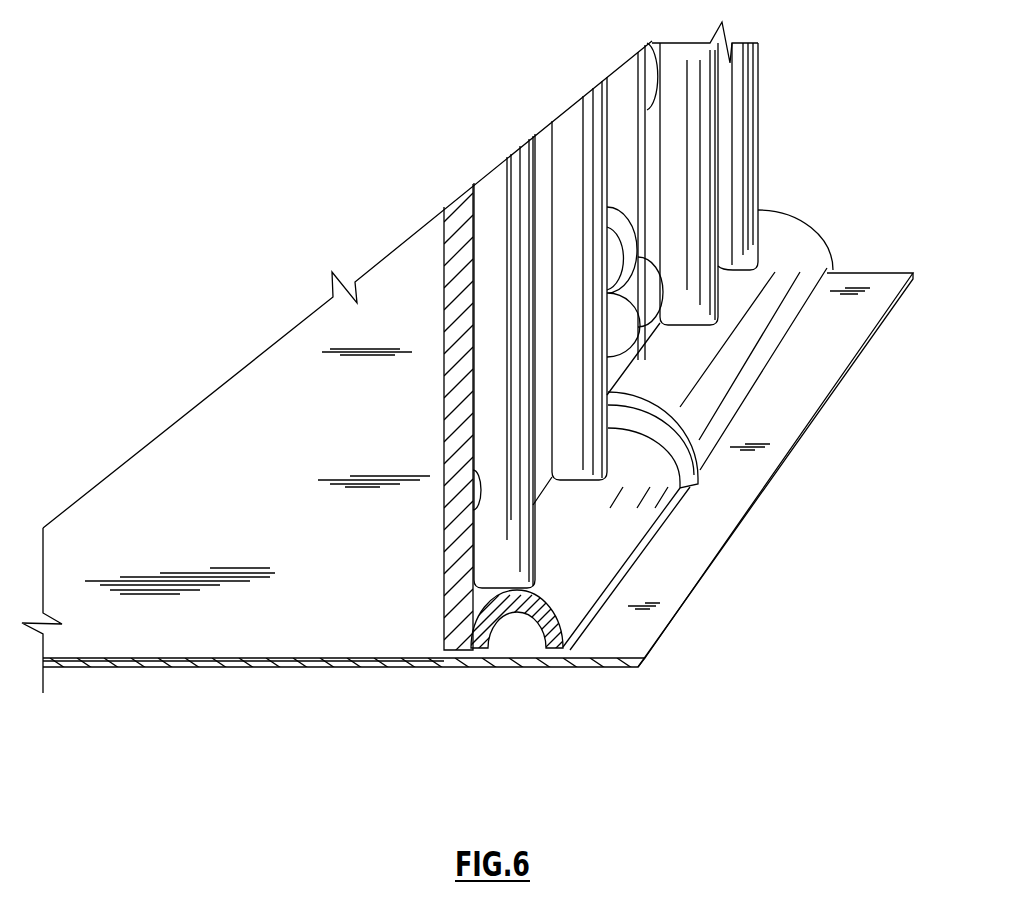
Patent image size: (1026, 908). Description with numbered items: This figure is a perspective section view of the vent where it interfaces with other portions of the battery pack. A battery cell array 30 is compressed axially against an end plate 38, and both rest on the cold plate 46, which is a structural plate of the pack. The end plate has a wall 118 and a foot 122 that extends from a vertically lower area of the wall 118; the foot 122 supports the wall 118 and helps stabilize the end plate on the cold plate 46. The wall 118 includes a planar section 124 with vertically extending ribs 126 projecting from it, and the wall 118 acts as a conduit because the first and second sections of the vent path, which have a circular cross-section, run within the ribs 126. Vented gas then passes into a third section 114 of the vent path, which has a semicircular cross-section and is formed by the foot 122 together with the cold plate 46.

The array 30 is at (217, 507).
The cold plate 46 is at (643, 647).
The planar section 124 is at (444, 516).
The ribs 126 is at (502, 517).
The wall 118 is at (532, 438).
The foot 122 is at (730, 353).
The end plate 38 is at (627, 502).
The third section 114 is at (505, 643).